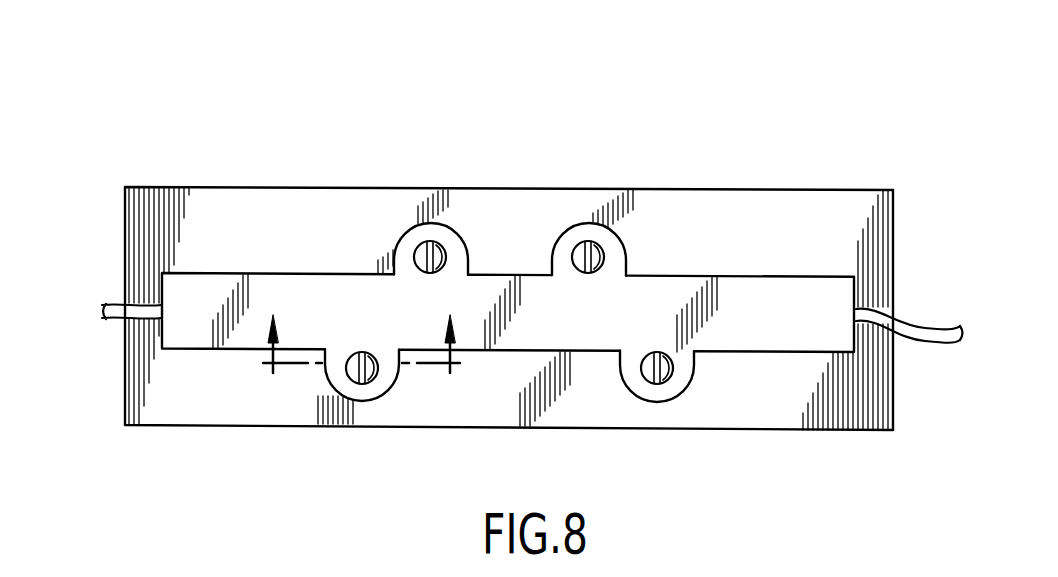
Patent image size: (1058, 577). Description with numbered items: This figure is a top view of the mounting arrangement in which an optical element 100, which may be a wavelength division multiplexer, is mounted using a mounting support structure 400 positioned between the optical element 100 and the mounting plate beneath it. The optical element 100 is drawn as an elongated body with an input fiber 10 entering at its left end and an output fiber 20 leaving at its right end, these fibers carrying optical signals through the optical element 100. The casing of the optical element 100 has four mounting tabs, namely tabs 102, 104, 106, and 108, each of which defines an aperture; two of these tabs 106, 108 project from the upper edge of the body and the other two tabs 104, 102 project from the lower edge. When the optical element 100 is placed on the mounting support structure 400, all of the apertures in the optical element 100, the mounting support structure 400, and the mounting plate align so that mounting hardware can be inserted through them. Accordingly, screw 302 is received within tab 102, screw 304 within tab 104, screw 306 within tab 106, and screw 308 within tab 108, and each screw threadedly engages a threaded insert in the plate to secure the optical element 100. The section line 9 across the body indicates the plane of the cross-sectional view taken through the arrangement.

The mounting support structure 400 is at (825, 191).
The optical element 100 is at (812, 325).
The mounting tab 106 is at (413, 222).
The screw 306 is at (440, 250).
The mounting tab 108 is at (626, 243).
The screw 308 is at (598, 250).
The mounting tab 104 is at (384, 397).
The screw 304 is at (356, 378).
The mounting tab 102 is at (622, 398).
The screw 302 is at (688, 380).
The input fiber 10 is at (141, 303).
The output fiber 20 is at (928, 327).
The section line 9- 9 is at (361, 327).